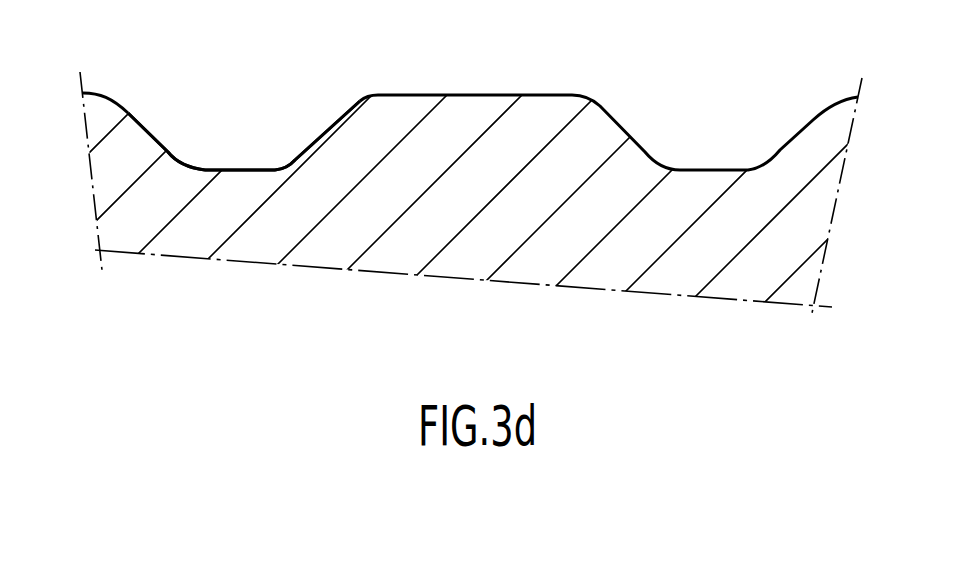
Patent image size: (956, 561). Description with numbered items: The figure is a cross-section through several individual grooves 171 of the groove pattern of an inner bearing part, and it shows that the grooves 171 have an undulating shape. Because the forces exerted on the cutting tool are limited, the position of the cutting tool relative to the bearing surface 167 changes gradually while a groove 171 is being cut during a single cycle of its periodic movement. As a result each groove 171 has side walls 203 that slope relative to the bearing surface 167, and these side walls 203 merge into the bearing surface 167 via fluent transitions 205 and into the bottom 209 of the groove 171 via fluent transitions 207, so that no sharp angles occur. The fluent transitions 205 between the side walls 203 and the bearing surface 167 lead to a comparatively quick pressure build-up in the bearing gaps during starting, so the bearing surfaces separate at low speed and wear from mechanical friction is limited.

The groove 171 is at (245, 107).
The fluent transition 205 is at (122, 99).
The side wall 203 is at (156, 131).
The fluent transition 207 is at (191, 158).
The bottom 209 is at (236, 168).
The bearing surface 167 is at (490, 95).